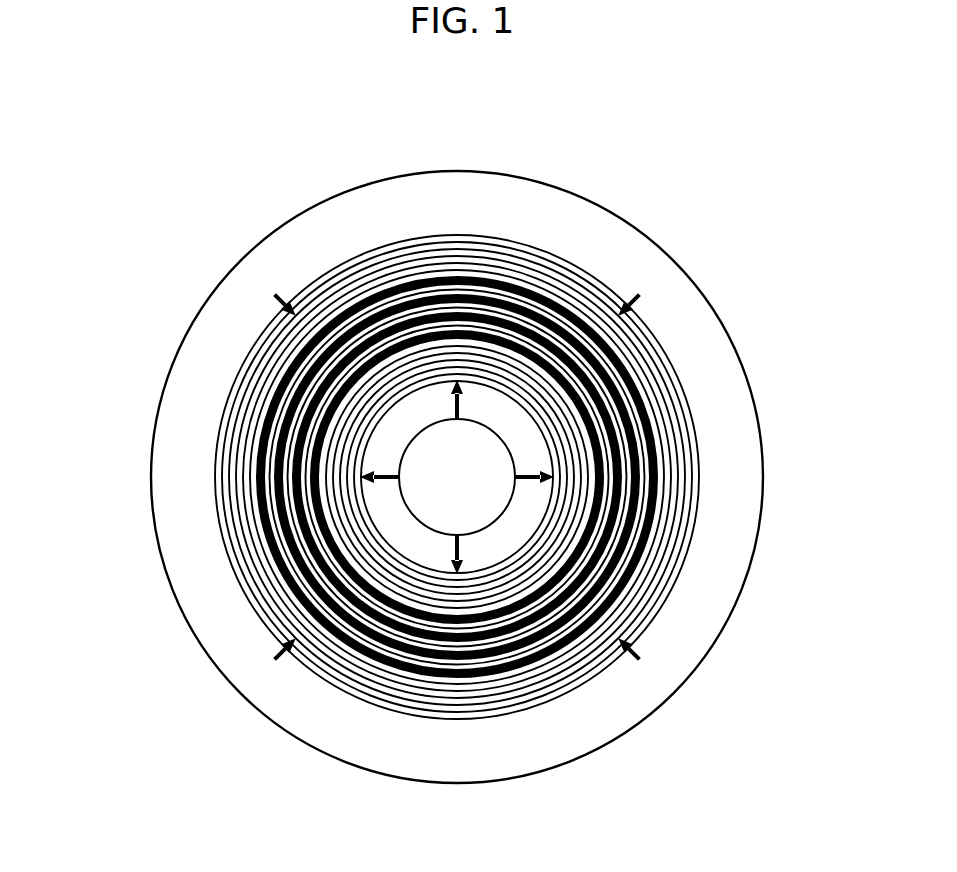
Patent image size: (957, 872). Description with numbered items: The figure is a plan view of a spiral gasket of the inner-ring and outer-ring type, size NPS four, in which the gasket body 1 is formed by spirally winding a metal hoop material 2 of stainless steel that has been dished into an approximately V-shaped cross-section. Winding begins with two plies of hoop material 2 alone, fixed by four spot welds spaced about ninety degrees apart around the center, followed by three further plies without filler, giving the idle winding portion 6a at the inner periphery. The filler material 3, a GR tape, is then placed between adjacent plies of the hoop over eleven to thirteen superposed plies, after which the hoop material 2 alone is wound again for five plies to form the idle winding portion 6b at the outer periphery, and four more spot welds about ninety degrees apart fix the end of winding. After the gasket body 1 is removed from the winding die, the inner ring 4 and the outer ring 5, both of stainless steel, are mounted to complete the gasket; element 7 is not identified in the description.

The gasket body 1 is at (351, 179).
The metal hoop material 2 is at (258, 373).
The filler material 3 is at (263, 453).
The inner ring 4 is at (390, 515).
The outer ring 5 is at (283, 224).
The idle winding portion at the inner periphery 6a is at (455, 568).
The idle winding portion at the outer periphery 6b is at (490, 236).
The groove 7 is at (448, 553).